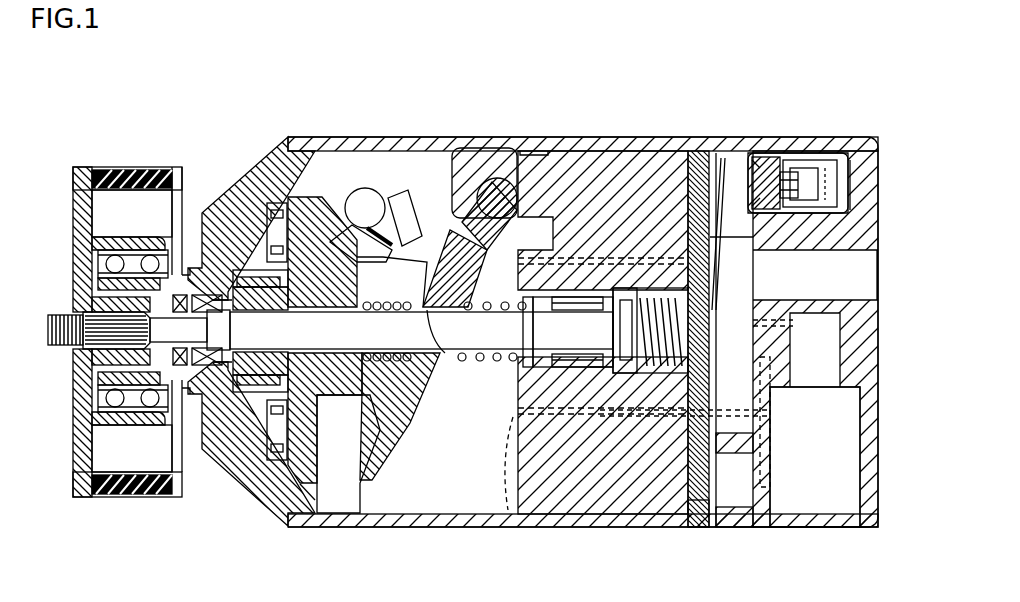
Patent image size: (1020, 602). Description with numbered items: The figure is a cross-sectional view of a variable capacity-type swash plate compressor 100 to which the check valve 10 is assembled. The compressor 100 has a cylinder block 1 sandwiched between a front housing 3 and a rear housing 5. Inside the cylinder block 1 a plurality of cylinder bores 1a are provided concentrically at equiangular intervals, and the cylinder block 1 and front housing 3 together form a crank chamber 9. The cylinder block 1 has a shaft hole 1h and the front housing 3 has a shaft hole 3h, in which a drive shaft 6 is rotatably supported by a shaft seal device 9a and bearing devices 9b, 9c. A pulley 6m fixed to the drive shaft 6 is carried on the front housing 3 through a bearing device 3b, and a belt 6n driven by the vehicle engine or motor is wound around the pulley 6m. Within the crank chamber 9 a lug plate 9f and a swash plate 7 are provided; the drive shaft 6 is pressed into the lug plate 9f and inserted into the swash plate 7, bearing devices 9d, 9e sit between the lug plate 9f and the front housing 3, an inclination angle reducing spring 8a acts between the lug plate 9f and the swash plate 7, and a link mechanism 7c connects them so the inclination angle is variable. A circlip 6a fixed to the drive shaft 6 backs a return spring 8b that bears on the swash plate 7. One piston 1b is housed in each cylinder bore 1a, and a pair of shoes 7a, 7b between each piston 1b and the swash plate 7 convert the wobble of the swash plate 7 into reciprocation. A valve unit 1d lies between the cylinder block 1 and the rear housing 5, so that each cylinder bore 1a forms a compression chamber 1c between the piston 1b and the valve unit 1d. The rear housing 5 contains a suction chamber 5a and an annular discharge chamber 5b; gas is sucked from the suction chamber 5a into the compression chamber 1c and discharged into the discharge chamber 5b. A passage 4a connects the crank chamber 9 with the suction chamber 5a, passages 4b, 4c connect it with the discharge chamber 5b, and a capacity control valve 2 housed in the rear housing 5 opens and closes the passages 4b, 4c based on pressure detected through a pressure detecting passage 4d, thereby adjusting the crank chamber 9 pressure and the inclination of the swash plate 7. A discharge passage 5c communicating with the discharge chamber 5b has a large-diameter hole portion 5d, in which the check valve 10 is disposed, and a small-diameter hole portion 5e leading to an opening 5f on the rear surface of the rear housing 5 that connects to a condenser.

The variable capacity-type swash plate compressor 100 is at (214, 91).
The cylinder block 1 is at (576, 150).
The cylinder bore 1a is at (543, 152).
The piston 1b is at (620, 190).
The compression chamber 1c is at (699, 180).
The valve unit 1d is at (700, 530).
The shaft hole 1h is at (597, 368).
The capacity control valve 2 is at (823, 494).
The front housing 3 is at (284, 150).
The bearing device 3b is at (150, 256).
The shaft hole 3h is at (211, 292).
The passage 4a is at (648, 248).
The passage 4b is at (508, 512).
The passage 4c is at (764, 362).
The pressure detecting passage 4d is at (800, 332).
The rear housing 5 is at (870, 482).
The suction chamber 5a is at (733, 342).
The discharge chamber 5b is at (732, 192).
The discharge passage 5c is at (767, 80).
The large-diameter hole portion 5d is at (779, 166).
The small-diameter hole portion 5e is at (828, 162).
The opening 5f is at (858, 176).
The drive shaft 6 is at (260, 330).
The circlip 6a is at (518, 362).
The pulley 6m is at (82, 472).
The belt 6n is at (136, 494).
The swash plate 7 is at (382, 462).
The shoe 7a is at (456, 216).
The shoe 7b is at (492, 180).
The link mechanism 7c is at (365, 186).
The inclination angle reducing spring 8a is at (414, 250).
The return spring 8b is at (463, 365).
The crank chamber 9 is at (350, 492).
The shaft seal device 9a is at (184, 366).
The bearing device 9b is at (215, 366).
The bearing device 9c is at (577, 360).
The bearing device 9d is at (258, 382).
The bearing device 9e is at (273, 412).
The lug plate 9f is at (305, 460).
The check valve 10 is at (778, 158).